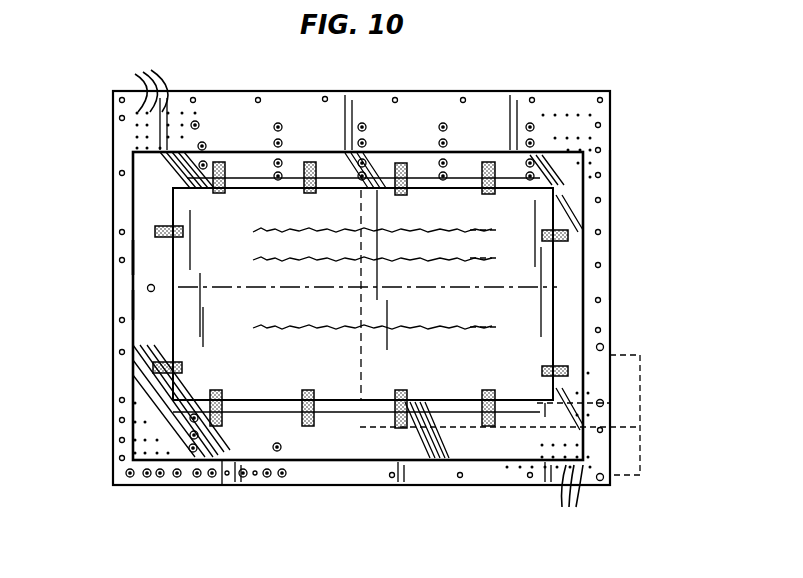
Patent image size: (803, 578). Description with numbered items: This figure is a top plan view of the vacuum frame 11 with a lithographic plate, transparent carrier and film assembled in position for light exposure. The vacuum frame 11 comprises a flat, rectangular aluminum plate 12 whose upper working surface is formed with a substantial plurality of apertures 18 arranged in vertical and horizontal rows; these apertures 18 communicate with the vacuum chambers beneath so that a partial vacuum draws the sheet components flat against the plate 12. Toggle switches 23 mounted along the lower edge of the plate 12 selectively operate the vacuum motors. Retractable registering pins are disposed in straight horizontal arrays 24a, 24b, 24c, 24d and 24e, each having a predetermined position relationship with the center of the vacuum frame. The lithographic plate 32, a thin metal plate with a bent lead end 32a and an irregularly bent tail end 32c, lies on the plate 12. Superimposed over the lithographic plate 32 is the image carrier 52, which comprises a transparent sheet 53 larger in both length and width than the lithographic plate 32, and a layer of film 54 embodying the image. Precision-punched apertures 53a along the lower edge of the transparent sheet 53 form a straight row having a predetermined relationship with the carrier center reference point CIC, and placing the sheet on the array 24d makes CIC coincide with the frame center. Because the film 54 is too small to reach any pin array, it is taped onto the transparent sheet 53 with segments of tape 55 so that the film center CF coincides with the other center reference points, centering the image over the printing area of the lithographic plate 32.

The vacuum frame 11 is at (614, 82).
The plate 12 is at (604, 200).
The apertures 18 is at (349, 295).
The toggle switches 23 is at (160, 478).
The array of retractable pins 24a is at (192, 170).
The array of retractable pins 24b is at (206, 162).
The array of retractable pins 24c is at (205, 142).
The array of retractable pins 24d is at (197, 120).
The array of retractable pins 24e is at (146, 288).
The lithographic plate 32 is at (453, 181).
The lead end 32a is at (428, 415).
The tail end 32c is at (378, 178).
The image carrier 52 is at (132, 260).
The transparent sheet 53 is at (134, 305).
The apertures 53a is at (281, 451).
The layer of film 54 is at (180, 318).
The segments of tape 55 is at (184, 232).
The center of the film CF is at (372, 290).
The center reference point of the image carrier CIC is at (361, 287).